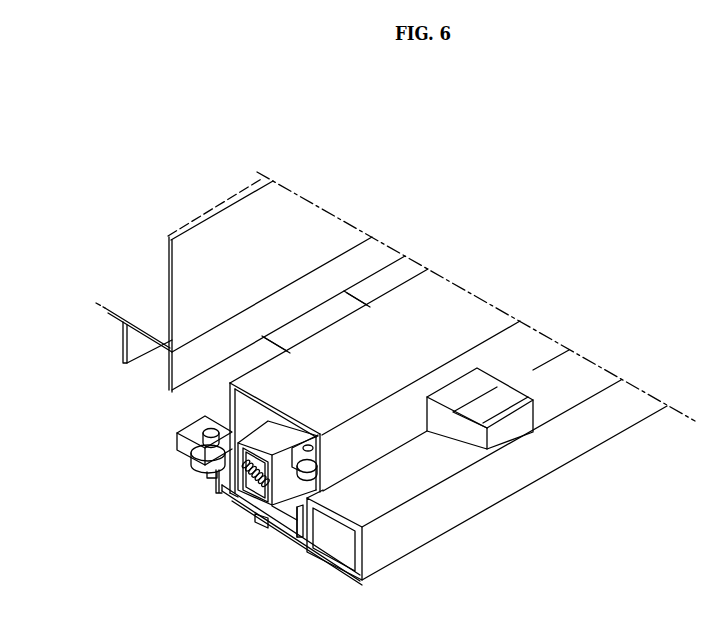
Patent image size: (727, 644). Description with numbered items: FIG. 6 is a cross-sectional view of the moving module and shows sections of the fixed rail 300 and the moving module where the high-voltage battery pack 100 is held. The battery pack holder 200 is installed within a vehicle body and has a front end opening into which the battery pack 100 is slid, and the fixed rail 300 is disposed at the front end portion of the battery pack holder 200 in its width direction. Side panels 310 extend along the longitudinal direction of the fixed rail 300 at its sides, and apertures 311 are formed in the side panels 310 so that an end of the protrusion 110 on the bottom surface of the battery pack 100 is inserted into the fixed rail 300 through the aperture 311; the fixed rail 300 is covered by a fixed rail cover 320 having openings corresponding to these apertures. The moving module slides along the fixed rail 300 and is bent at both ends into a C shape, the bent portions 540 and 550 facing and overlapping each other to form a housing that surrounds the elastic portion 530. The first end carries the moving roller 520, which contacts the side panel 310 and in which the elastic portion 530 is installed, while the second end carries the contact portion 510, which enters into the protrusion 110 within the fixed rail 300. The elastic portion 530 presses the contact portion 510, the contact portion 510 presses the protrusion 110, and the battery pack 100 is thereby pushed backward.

The high-voltage battery pack 100 is at (177, 281).
The protrusion 110 is at (184, 455).
The battery pack holder 200 is at (590, 450).
The fixed rail 300 is at (285, 537).
The side panel 310 is at (312, 502).
The aperture 311 is at (299, 506).
The fixed rail cover 320 is at (457, 308).
The contact portion 510 is at (212, 477).
The moving roller 520 is at (318, 462).
The elastic portion 530 is at (238, 492).
The bent portion 540 is at (282, 436).
The bent portion 550 is at (257, 446).